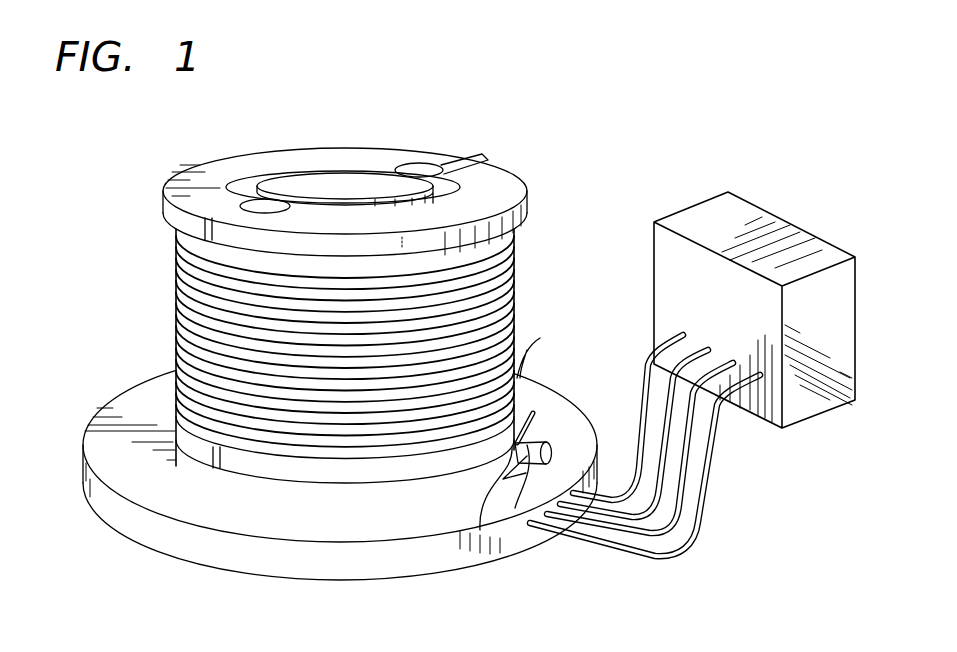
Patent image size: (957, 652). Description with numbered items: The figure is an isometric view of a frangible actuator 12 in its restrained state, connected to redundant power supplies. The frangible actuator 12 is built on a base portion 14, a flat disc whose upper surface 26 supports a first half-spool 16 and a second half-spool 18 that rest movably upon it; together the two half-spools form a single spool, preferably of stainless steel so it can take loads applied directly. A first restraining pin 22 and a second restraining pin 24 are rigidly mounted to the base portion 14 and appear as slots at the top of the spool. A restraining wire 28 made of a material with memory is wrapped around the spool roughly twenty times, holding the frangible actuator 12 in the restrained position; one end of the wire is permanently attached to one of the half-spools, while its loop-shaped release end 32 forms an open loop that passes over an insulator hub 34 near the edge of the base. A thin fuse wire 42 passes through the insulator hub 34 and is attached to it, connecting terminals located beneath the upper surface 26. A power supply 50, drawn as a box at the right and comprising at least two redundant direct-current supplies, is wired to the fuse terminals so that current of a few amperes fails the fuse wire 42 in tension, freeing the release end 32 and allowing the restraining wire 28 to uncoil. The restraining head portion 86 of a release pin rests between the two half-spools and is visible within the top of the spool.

The frangible actuator 12 is at (93, 259).
The base portion 14 is at (137, 516).
The first half-spool 16 is at (527, 196).
The second half-spool 18 is at (165, 229).
The first restraining pin 22 is at (419, 171).
The second restraining pin 24 is at (260, 208).
The upper surface 26 is at (350, 528).
The restraining wire 28 is at (527, 350).
The loop-shaped release end 32 is at (480, 530).
The insulator hub 34 is at (549, 458).
The fuse wire 42 is at (515, 508).
The power supply 50 is at (737, 311).
The restraining head portion 86 is at (326, 186).